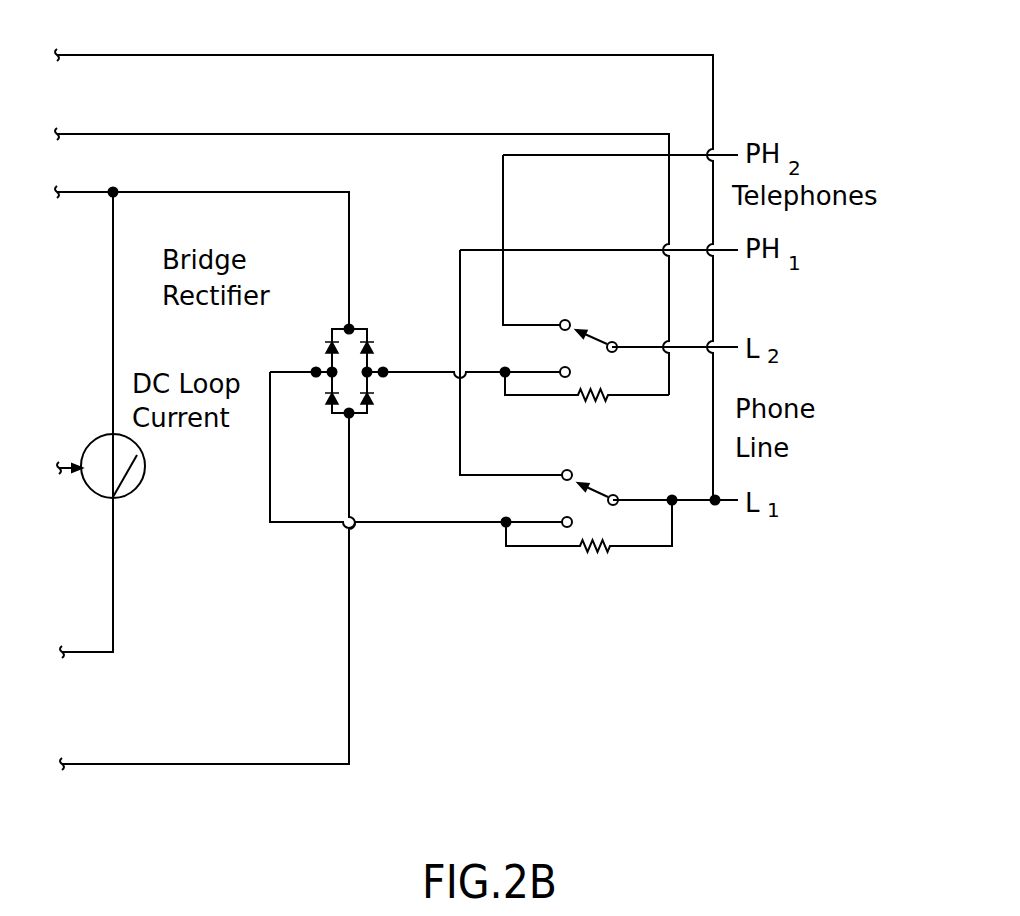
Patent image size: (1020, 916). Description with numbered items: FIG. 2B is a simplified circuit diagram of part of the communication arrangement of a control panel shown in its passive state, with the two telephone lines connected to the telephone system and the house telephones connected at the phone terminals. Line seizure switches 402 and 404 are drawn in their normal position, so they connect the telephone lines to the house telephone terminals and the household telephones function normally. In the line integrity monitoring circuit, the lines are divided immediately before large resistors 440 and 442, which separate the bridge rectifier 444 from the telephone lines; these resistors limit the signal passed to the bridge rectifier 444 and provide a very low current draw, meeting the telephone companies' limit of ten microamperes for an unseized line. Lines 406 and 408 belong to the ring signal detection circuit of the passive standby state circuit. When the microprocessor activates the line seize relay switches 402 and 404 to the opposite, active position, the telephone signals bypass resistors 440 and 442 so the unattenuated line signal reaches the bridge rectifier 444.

The line seizure switch 402 is at (578, 485).
The line seizure switch 404 is at (597, 336).
The line 406 is at (174, 55).
The line 408 is at (179, 134).
The large resistor 440 is at (630, 592).
The large resistor 442 is at (583, 398).
The bridge rectifier 444 is at (360, 328).